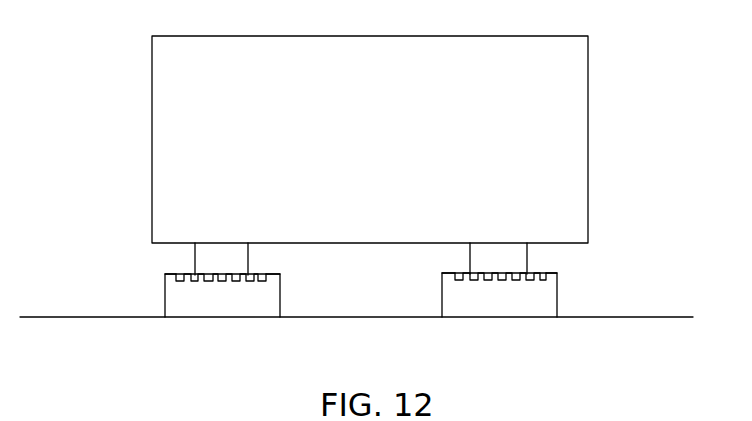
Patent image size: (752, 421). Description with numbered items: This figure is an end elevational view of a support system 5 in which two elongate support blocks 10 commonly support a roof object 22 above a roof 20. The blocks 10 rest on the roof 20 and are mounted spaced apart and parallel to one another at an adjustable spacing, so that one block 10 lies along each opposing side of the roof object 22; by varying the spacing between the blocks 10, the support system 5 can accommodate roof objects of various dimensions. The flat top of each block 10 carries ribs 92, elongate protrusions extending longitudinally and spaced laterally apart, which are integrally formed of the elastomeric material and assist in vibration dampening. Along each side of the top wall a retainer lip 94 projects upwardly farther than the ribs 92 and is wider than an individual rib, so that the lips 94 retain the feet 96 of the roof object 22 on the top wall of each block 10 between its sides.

The support system 5 is at (90, 272).
The support block 10 is at (163, 300).
The roof 20 is at (670, 322).
The roof object 22 is at (580, 130).
The ribs 92 is at (248, 278).
The retainer lip 94 is at (163, 276).
The feet 96 is at (215, 257).